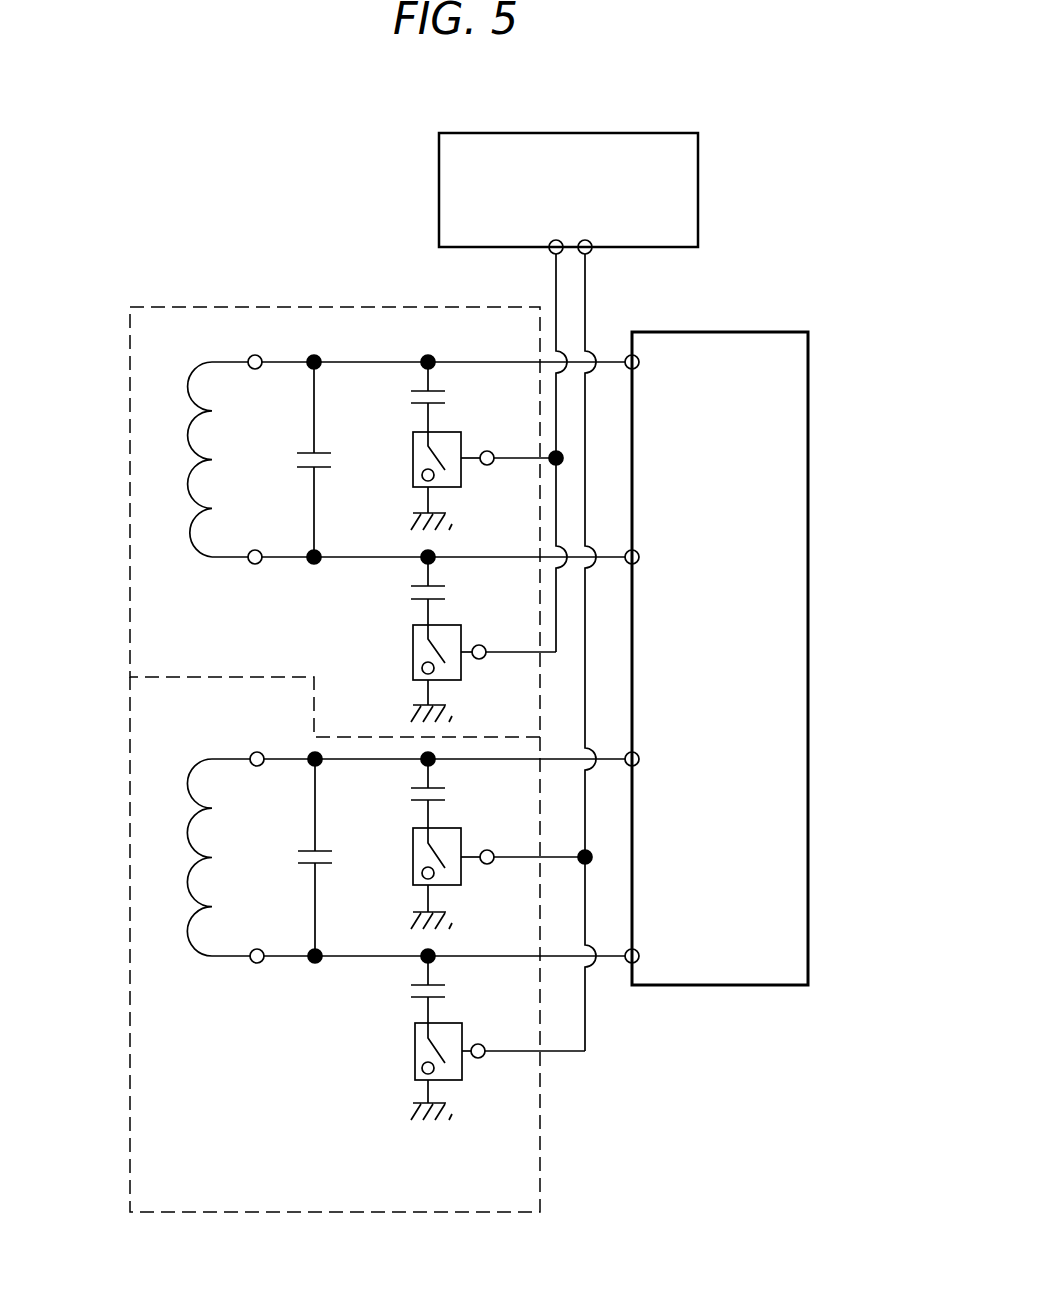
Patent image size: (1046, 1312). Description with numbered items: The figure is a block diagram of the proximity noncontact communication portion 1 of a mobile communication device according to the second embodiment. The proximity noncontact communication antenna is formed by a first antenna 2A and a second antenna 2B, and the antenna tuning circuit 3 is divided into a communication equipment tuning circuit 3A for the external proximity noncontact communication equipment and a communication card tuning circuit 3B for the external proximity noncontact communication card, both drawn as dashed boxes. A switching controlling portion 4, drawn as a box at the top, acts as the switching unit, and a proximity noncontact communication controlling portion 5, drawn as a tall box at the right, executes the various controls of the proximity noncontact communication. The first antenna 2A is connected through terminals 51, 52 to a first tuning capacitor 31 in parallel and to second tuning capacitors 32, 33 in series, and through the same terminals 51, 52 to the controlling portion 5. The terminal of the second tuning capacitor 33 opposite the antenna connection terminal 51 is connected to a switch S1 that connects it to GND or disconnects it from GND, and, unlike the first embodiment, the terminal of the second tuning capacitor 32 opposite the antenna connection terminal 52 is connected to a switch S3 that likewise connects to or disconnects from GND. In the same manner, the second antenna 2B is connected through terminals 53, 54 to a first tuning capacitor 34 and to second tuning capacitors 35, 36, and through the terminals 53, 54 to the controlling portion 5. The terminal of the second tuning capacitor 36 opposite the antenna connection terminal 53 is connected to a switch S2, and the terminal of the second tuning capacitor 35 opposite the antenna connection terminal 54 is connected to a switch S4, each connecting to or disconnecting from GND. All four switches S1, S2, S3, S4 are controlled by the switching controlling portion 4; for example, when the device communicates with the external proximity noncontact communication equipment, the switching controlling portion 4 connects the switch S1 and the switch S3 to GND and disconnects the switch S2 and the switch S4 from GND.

The proximity noncontact communication portion 1 is at (808, 412).
The first antenna 2A is at (188, 484).
The second antenna 2B is at (190, 848).
The antenna tuning circuit 3 is at (424, 715).
The communication equipment tuning circuit 3A is at (282, 305).
The communication card tuning circuit 3B is at (543, 1138).
The switching controlling portion 4 is at (698, 182).
The proximity noncontact communication controlling portion 5 is at (722, 332).
The first tuning capacitor 31 is at (331, 461).
The second tuning capacitor 32 is at (445, 594).
The second tuning capacitor 33 is at (445, 398).
The first tuning capacitor 34 is at (332, 857).
The second tuning capacitor 35 is at (445, 991).
The second tuning capacitor 36 is at (445, 794).
The terminal 51 is at (254, 348).
The terminal 52 is at (255, 565).
The terminal 53 is at (257, 767).
The terminal 54 is at (257, 963).
The switch S1 is at (448, 488).
The switch S2 is at (450, 886).
The switch S3 is at (448, 681).
The switch S4 is at (448, 1081).